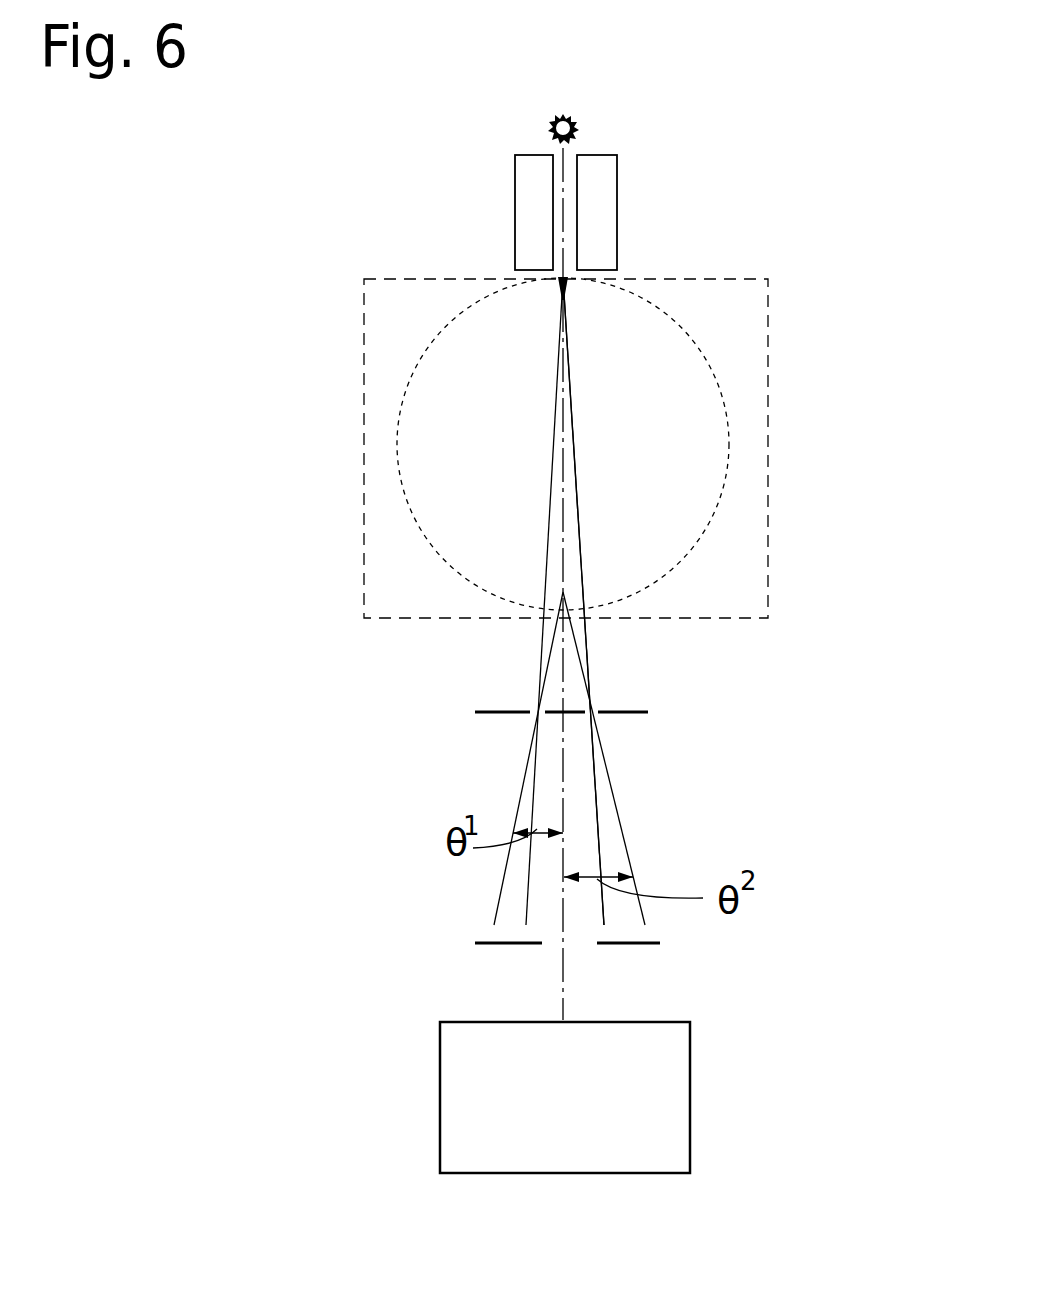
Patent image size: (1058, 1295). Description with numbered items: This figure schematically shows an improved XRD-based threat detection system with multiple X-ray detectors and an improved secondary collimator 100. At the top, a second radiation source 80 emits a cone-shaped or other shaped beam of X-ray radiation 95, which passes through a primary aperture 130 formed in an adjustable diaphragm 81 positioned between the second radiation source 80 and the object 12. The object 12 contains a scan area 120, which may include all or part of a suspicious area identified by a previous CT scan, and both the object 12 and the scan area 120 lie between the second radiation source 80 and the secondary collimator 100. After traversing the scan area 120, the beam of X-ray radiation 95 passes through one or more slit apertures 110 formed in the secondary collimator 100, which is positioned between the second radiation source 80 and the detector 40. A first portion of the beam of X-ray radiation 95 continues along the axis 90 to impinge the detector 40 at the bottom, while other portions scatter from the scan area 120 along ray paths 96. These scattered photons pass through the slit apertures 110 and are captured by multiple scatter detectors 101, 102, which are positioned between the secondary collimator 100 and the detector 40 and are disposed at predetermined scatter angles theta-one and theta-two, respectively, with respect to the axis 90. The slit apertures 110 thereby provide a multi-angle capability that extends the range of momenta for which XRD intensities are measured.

The second radiation source 80 is at (542, 143).
The adjustable diaphragm 81 is at (580, 277).
The primary aperture 130 is at (587, 277).
The object 12 is at (772, 303).
The scan area 120 is at (418, 530).
The beam of X-ray radiation 95 is at (573, 427).
The slit apertures 110 is at (600, 688).
The secondary collimator 100 is at (643, 709).
The ray paths 96 is at (625, 837).
The scatter detector 101 is at (483, 945).
The scatter detector 102 is at (652, 945).
The axis 90 is at (567, 1002).
The detector 40 is at (587, 1109).